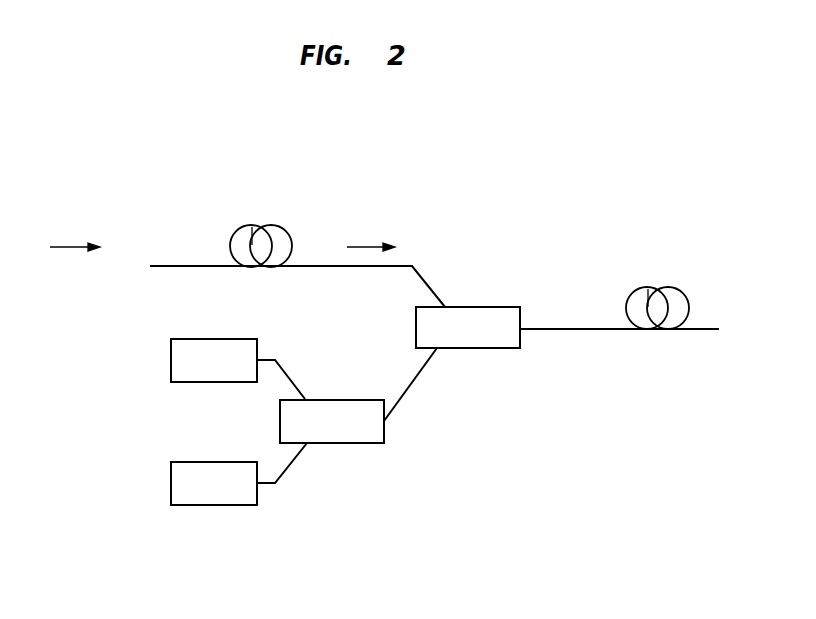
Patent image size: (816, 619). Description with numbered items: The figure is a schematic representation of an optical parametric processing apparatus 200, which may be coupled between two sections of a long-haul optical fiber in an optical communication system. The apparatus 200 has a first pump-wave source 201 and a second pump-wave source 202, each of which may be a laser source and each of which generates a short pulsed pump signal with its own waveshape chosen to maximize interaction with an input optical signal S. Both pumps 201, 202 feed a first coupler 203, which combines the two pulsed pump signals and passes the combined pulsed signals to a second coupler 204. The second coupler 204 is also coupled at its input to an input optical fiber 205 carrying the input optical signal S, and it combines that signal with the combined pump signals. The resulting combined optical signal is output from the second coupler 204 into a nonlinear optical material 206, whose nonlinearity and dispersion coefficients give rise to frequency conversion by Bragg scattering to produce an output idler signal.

The optical parametric processing apparatus 200 is at (249, 551).
The first pump-wave source 201 is at (208, 338).
The second pump-wave source 202 is at (210, 461).
The first coupler 203 is at (341, 399).
The second coupler 204 is at (478, 306).
The input optical fiber 205 is at (183, 268).
The nonlinear optical material 206 is at (597, 330).